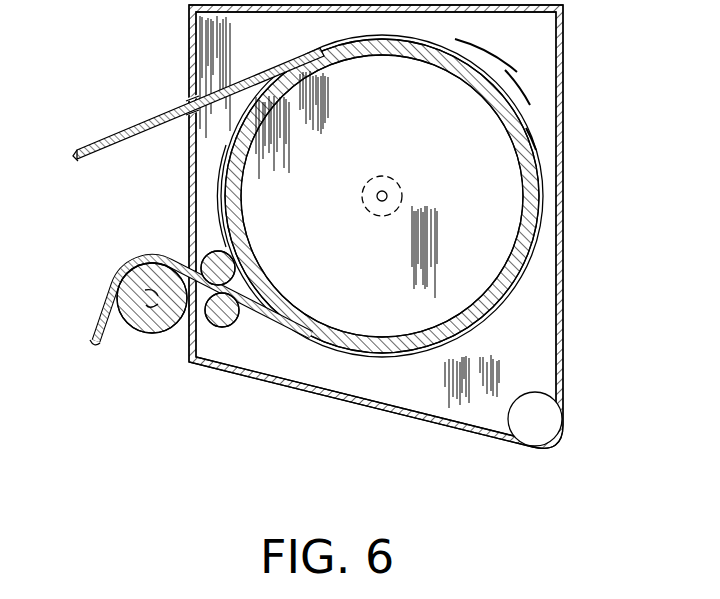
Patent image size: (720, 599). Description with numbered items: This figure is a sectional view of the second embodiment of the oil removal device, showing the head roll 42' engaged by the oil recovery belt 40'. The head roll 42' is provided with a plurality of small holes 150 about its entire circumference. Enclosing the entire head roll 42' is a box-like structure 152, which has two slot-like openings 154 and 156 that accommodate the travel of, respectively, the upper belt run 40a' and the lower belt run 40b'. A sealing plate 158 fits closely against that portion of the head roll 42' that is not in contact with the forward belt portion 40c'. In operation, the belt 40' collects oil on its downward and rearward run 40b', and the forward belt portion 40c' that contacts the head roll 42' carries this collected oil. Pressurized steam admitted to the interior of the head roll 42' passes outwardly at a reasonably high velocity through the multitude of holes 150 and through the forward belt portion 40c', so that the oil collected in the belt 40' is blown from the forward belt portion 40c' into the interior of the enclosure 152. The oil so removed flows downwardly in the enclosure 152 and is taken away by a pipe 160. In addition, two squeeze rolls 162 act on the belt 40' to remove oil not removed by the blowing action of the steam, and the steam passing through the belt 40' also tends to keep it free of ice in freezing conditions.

The oil recovery belt 40' is at (382, 190).
The upper belt run 40a' is at (182, 104).
The lower belt run 40b' is at (164, 312).
The forward belt portion 40c' is at (576, 95).
The head roll 42' is at (584, 137).
The small holes 150 is at (535, 158).
The box-like structure 152 is at (565, 55).
The slot-like opening 154 is at (192, 95).
The slot-like opening 156 is at (205, 258).
The sealing plate 158 is at (227, 171).
The pipe 160 is at (548, 412).
The squeeze rolls 162 is at (226, 326).